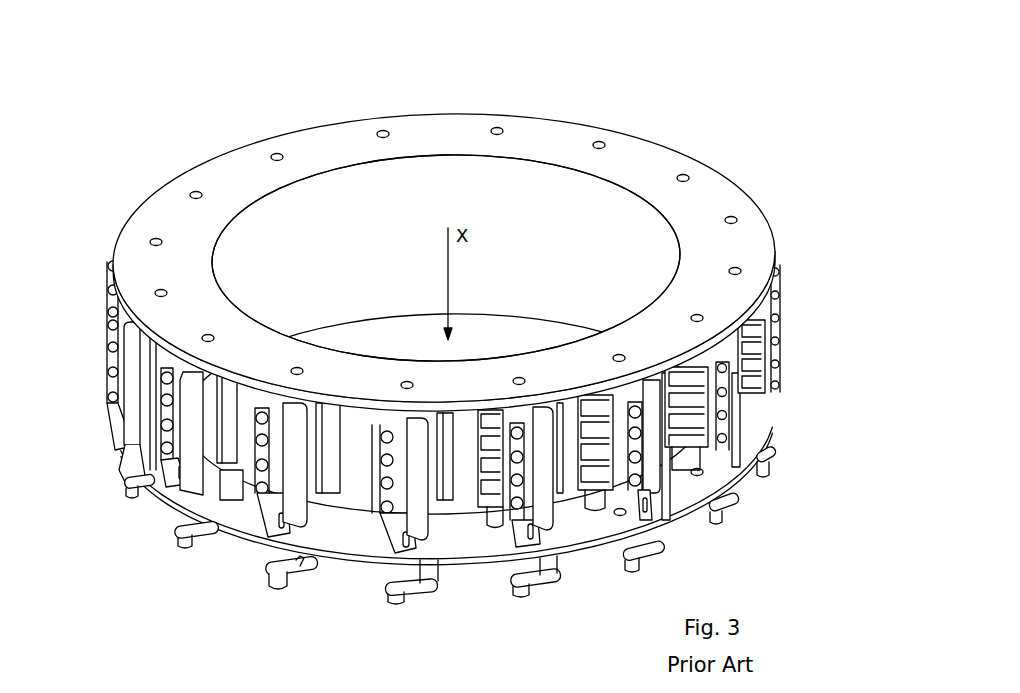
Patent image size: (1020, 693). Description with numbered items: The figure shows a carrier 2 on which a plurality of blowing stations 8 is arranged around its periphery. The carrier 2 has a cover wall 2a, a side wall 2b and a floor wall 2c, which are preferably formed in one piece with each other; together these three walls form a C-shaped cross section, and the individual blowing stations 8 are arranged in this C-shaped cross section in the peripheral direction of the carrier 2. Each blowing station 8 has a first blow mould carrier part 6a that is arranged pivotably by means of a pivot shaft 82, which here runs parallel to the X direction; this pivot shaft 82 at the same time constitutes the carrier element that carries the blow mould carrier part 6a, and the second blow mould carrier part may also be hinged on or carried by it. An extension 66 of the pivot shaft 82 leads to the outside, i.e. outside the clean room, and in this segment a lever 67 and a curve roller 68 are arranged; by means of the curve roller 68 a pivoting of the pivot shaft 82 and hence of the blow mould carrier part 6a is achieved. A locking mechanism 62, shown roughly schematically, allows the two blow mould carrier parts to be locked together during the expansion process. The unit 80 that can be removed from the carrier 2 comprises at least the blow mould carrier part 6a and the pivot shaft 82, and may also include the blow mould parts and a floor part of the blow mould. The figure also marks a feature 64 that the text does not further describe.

The carrier 2 is at (328, 142).
The cover wall 2a is at (153, 224).
The side wall 2b is at (418, 196).
The floor wall 2c is at (458, 549).
The first blow mould carrier part 6a is at (602, 492).
The blowing station 8 is at (145, 521).
The locking mechanism 62 is at (114, 352).
The bolt hole 64 is at (519, 378).
The extension of the pivot shaft 66 is at (310, 568).
The lever 67 is at (292, 573).
The curve roller 68 is at (276, 584).
The removable unit 80 is at (160, 464).
The pivot shaft 82 is at (207, 497).